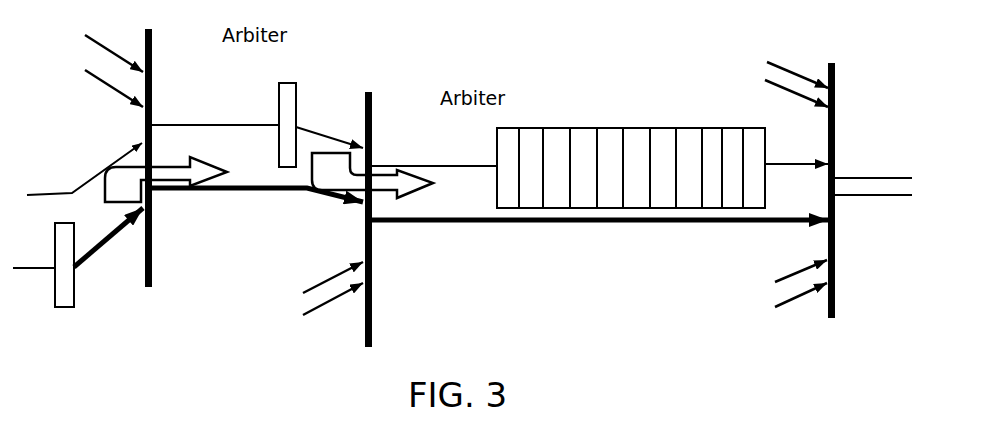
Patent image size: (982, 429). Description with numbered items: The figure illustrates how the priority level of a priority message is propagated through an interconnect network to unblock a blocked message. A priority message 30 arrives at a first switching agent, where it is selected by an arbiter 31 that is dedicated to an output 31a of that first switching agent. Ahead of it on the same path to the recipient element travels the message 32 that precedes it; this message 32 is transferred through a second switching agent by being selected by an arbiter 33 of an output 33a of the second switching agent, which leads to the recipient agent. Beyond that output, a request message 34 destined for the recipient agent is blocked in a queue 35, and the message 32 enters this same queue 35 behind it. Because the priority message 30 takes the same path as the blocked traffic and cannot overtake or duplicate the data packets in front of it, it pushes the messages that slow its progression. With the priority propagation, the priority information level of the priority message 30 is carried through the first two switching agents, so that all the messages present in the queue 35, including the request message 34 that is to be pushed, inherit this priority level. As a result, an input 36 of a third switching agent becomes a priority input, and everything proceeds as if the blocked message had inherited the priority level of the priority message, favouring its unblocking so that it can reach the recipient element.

The priority message 30 is at (65, 307).
The arbiter 31 is at (152, 40).
The output 31a is at (160, 144).
The message 32 is at (288, 83).
The arbiter 33 is at (372, 103).
The output 33a is at (421, 198).
The request message 34 is at (708, 135).
The queue 35 is at (619, 120).
The input 36 is at (803, 158).